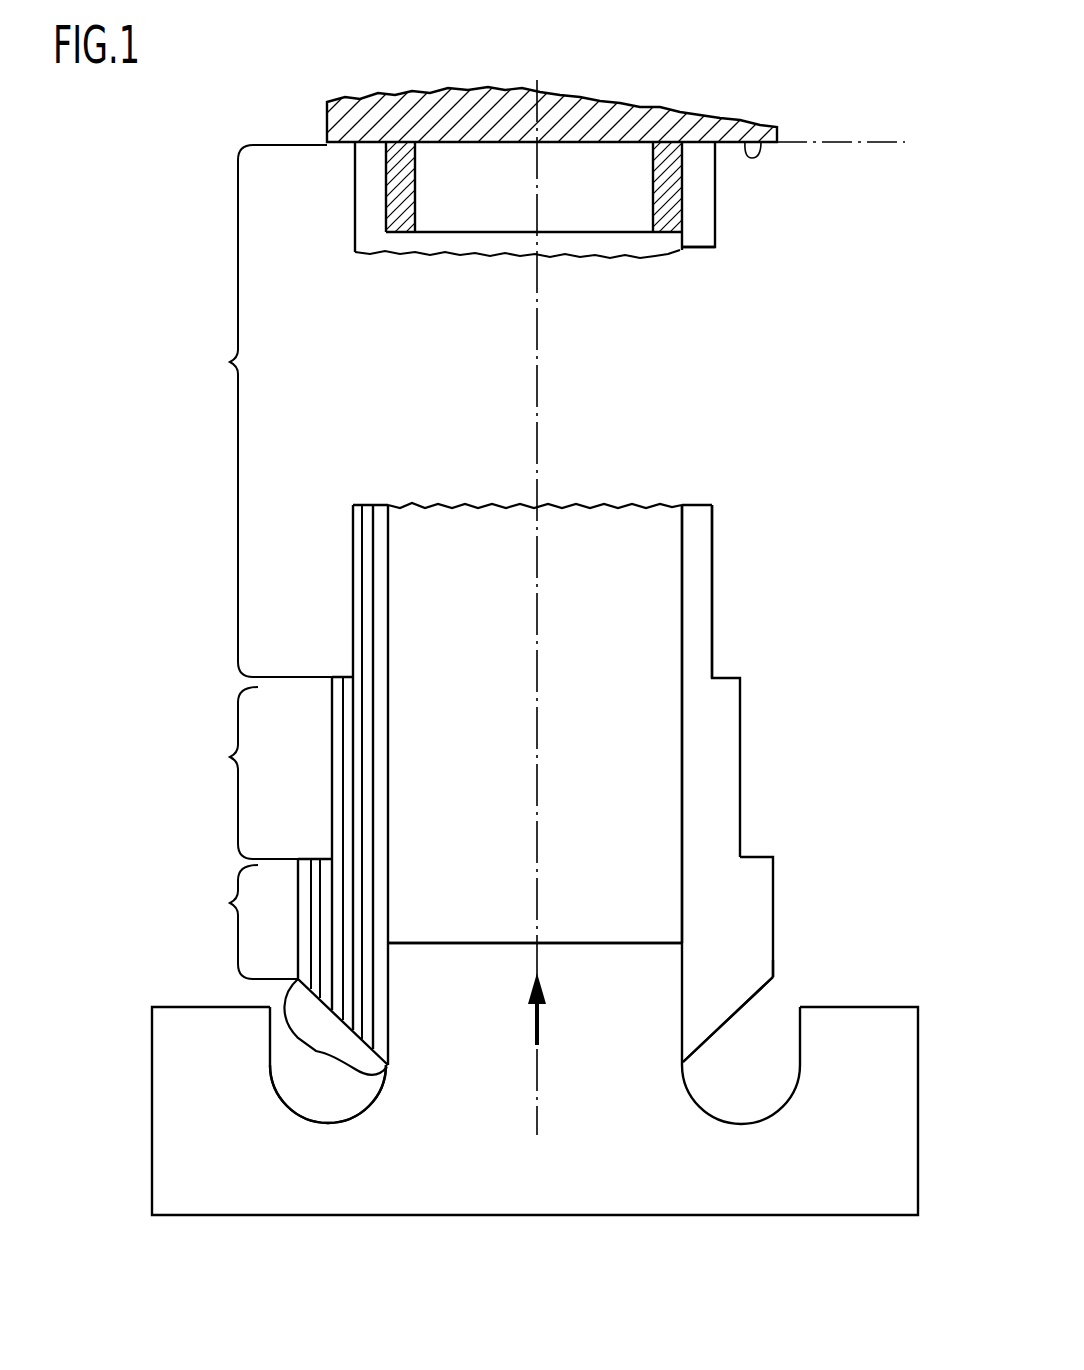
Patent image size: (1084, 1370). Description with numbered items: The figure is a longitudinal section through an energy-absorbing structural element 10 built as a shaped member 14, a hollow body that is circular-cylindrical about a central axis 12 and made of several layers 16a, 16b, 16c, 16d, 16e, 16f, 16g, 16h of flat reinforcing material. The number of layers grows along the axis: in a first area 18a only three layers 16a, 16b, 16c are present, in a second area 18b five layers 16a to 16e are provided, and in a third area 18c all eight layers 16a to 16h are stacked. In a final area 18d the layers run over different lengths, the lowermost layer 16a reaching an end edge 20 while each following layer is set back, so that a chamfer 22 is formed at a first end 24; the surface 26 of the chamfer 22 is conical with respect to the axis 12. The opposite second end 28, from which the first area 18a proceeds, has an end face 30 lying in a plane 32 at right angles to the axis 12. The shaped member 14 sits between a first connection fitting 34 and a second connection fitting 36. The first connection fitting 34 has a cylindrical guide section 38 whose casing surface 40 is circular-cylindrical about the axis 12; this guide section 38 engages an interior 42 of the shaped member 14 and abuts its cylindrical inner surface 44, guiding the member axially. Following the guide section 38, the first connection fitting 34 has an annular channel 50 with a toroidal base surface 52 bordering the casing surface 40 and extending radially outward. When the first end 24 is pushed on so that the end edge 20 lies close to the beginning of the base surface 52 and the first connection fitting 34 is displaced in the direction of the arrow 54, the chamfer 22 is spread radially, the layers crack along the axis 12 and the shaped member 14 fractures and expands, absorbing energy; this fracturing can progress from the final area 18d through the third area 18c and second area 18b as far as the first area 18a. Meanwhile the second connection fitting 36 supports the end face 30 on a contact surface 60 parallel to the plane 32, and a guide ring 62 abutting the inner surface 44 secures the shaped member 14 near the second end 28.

The energy-absorbing structural element 10 is at (714, 516).
The central axis 12 is at (543, 533).
The shaped member 14 is at (714, 567).
The lowermost layer of flat material 16a is at (382, 607).
The layer of flat material 16b is at (374, 628).
The layer of flat material 16c is at (363, 660).
The layer of flat material 16d is at (350, 705).
The layer of flat material 16e is at (337, 735).
The layer of flat material 16f is at (327, 872).
The layer of flat material 16g is at (317, 898).
The layer of flat material 16h is at (305, 927).
The first area 18a is at (255, 411).
The second area 18b is at (238, 773).
The third area 18c is at (238, 922).
The final area 18d is at (331, 1032).
The end edge 20 is at (383, 1075).
The chamfer 22 is at (733, 1018).
The first end 24 is at (740, 990).
The surface of the chamfer 26 is at (722, 1010).
The second end 28 is at (705, 185).
The end face 30 is at (697, 140).
The plane 32 is at (846, 142).
The first connection fitting 34 is at (668, 1173).
The second connection fitting 36 is at (570, 120).
The guide section 38 is at (605, 970).
The casing surface 40 is at (683, 953).
The interior 42 is at (630, 632).
The inner surface 44 is at (680, 250).
The channel 50 is at (745, 1108).
The base surface 52 is at (305, 1120).
The arrow 54 is at (530, 1027).
The contact surface 60 is at (760, 142).
The guide ring 62 is at (665, 200).